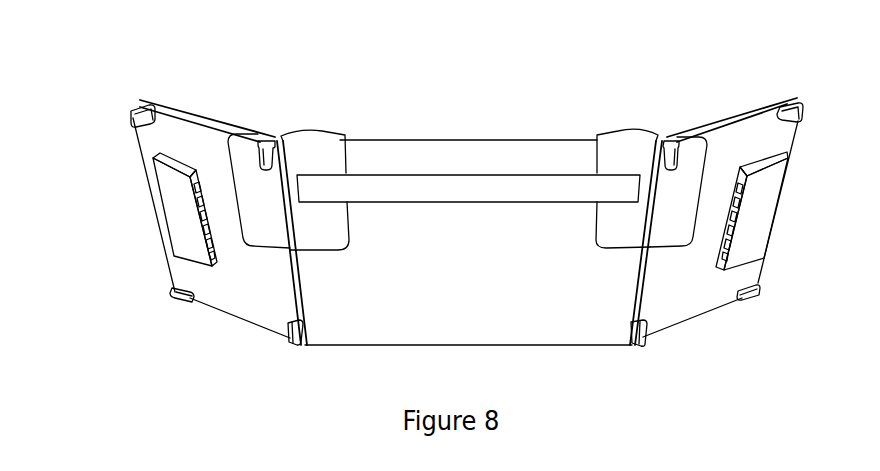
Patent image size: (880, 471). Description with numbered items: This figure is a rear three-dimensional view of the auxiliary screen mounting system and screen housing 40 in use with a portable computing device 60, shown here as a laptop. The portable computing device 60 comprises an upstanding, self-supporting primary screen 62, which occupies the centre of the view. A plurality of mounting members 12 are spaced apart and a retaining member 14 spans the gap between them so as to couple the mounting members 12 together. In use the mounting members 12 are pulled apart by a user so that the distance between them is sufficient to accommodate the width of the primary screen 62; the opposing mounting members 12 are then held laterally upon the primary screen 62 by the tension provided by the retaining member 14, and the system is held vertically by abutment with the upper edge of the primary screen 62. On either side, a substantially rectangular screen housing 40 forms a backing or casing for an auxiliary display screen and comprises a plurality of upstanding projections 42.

The mounting member 12 is at (320, 152).
The retaining member 14 is at (460, 182).
The screen housing 40 is at (147, 140).
The upstanding projection 42 is at (264, 130).
The portable computing device 60 is at (418, 222).
The primary screen 62 is at (568, 312).